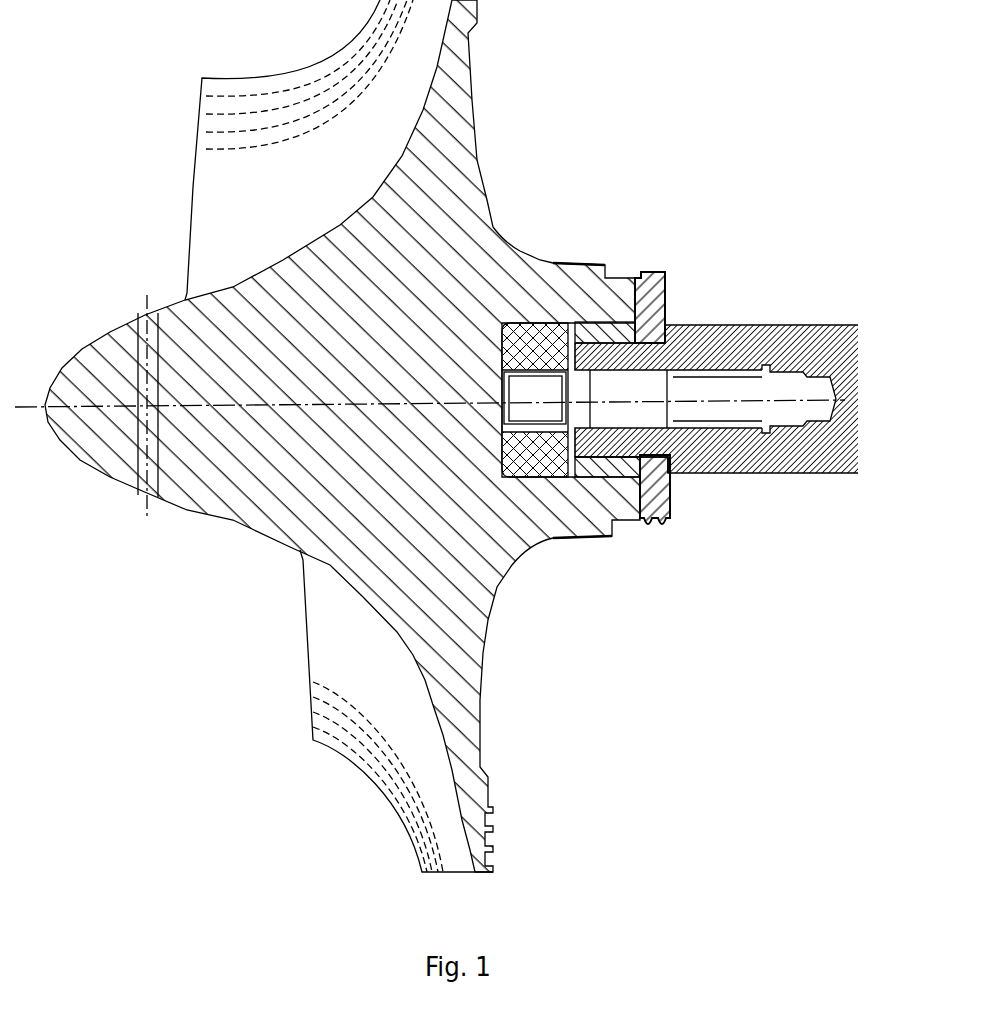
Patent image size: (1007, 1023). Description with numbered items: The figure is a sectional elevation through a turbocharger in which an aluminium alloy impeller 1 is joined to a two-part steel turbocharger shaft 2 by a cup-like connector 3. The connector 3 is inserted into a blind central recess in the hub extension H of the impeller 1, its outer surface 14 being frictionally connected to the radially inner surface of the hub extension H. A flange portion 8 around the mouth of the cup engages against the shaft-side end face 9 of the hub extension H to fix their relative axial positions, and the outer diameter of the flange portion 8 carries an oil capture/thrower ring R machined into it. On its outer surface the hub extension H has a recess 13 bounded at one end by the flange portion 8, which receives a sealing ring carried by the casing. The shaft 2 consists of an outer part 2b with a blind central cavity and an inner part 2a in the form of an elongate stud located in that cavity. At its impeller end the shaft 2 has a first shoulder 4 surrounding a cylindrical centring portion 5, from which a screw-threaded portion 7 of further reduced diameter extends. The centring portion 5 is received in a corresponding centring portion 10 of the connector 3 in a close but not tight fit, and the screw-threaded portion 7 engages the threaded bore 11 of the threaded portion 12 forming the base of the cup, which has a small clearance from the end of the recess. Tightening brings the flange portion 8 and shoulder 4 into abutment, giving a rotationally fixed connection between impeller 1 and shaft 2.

The impeller 1 is at (447, 112).
The turbocharger shaft 2 is at (728, 323).
The inner part of the shaft 2a is at (788, 408).
The outer part of the shaft 2b is at (802, 337).
The connector 3 is at (588, 335).
The first shoulder 4 is at (670, 463).
The cylindrical centring portion 5 is at (628, 445).
The screw-threaded portion 7 is at (550, 449).
The flange portion 8 is at (650, 297).
The shaft-side end face 9 is at (636, 293).
The centring portion of the connector 10 is at (637, 284).
The threaded bore 11 is at (540, 408).
The threaded portion 12 is at (522, 447).
The recess 13 is at (642, 272).
The outer surface 14 is at (577, 332).
The hub extension H is at (525, 292).
The oil capture/thrower ring R is at (643, 280).